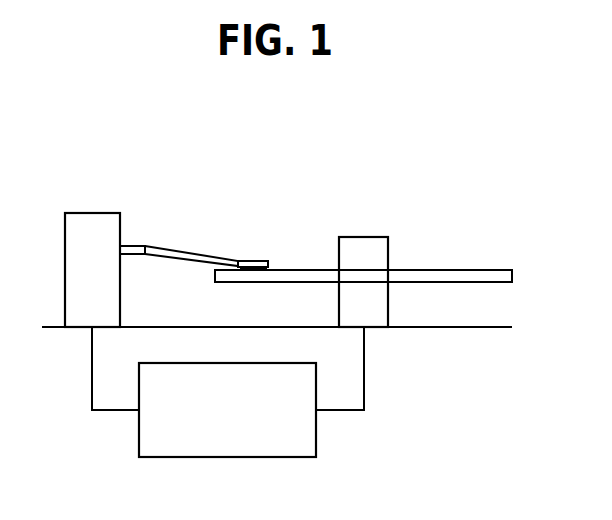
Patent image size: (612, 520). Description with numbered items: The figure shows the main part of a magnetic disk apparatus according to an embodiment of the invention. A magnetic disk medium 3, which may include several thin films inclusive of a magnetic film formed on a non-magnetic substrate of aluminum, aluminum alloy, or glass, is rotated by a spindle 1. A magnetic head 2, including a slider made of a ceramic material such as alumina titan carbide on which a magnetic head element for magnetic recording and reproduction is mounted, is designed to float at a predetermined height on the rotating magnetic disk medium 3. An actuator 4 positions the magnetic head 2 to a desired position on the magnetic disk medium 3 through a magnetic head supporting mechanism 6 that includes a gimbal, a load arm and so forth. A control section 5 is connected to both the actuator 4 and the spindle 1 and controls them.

The spindle 1 is at (362, 237).
The magnetic head 2 is at (257, 262).
The magnetic disk medium 3 is at (465, 270).
The actuator 4 is at (92, 213).
The control section 5 is at (316, 437).
The magnetic head supporting mechanism 6 is at (186, 248).